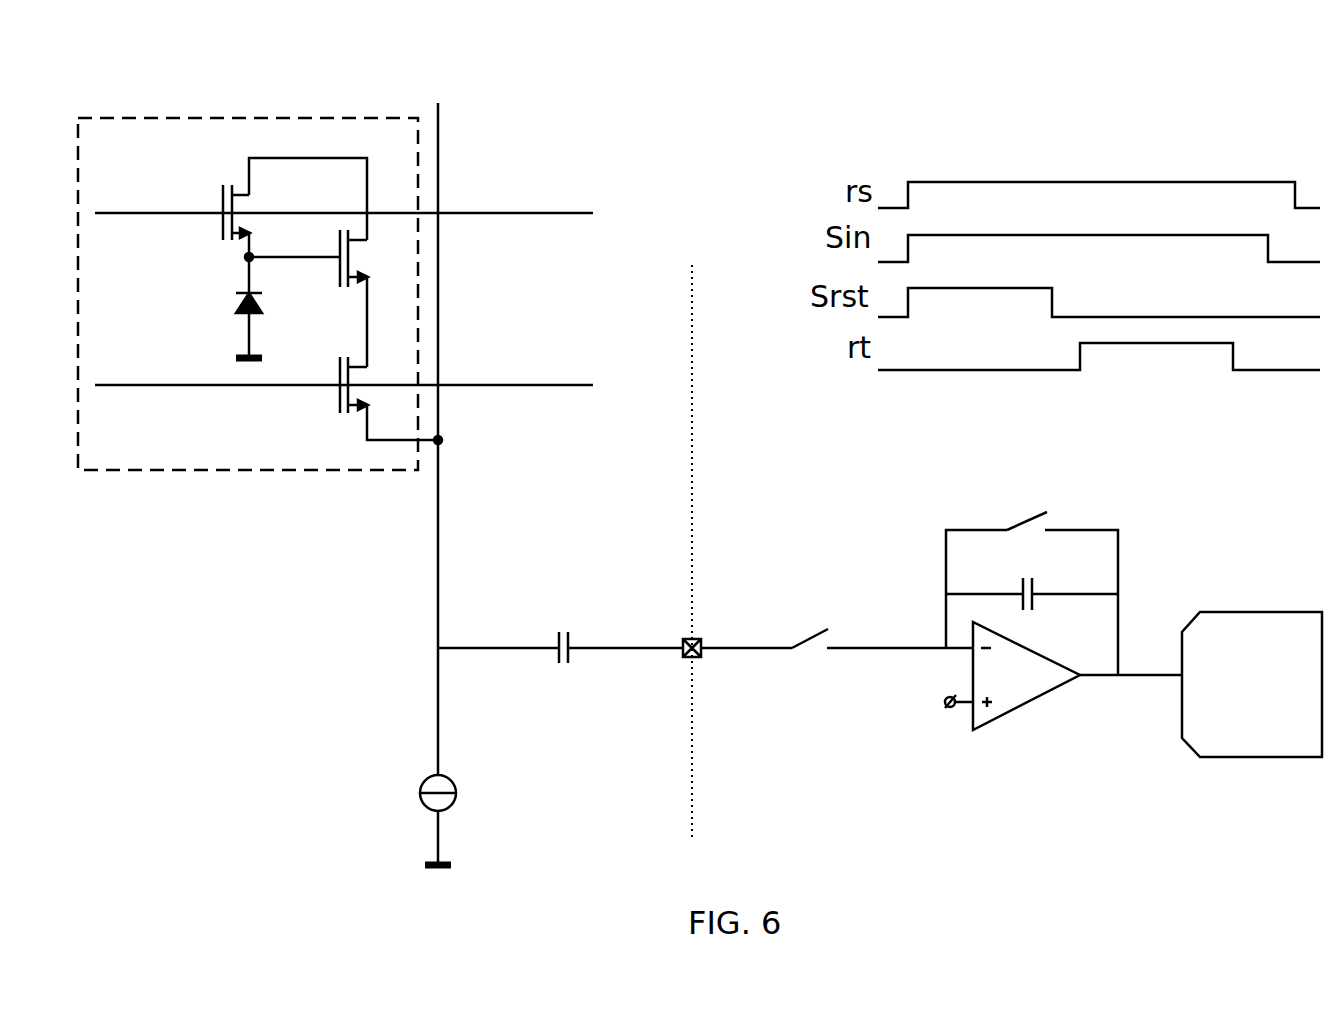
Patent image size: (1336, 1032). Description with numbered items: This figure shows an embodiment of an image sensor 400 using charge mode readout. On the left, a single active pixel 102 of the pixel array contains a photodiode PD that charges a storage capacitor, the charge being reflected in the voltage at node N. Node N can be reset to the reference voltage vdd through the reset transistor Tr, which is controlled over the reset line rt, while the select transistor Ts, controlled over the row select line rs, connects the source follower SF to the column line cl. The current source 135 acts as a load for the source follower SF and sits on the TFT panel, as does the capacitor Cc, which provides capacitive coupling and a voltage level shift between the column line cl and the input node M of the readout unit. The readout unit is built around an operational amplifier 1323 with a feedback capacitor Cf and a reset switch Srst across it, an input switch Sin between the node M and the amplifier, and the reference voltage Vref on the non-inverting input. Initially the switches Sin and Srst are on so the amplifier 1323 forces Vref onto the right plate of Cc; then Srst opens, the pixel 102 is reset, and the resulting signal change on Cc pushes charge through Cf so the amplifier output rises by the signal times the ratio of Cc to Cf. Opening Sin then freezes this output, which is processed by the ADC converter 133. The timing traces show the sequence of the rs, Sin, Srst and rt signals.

The image sensor 400 is at (872, 49).
The active pixel 102 is at (181, 480).
The column line cl is at (434, 555).
The reset line rt is at (513, 208).
The row select line rs is at (558, 382).
The reference voltage vdd is at (308, 181).
The reset transistor Tr is at (217, 195).
The node N is at (249, 257).
The photodiode PD is at (238, 302).
The source follower SF is at (367, 263).
The select transistor Ts is at (340, 403).
The capacitor Cc is at (560, 670).
The input node M is at (677, 551).
The current source 135 is at (458, 793).
The switch Sin is at (837, 620).
The switch Srst is at (1032, 574).
The feedback capacitor Cf is at (1032, 577).
The operational amplifier 1323 is at (1023, 715).
The reference voltage Vref is at (924, 702).
The ADC converter 133 is at (1262, 606).